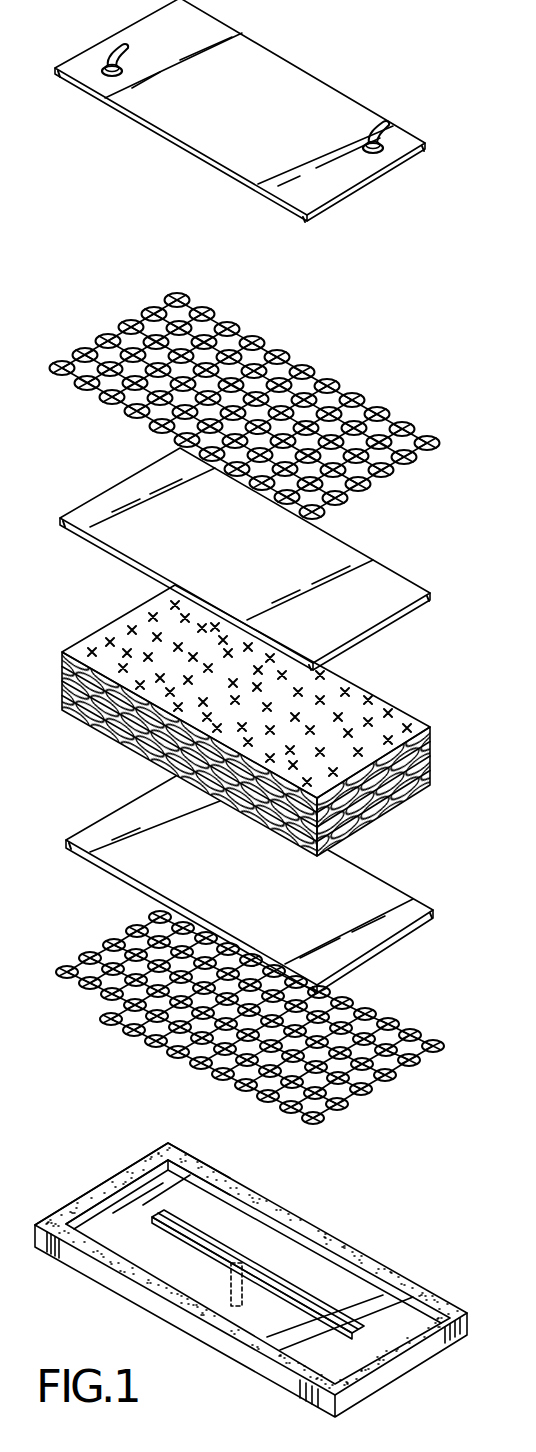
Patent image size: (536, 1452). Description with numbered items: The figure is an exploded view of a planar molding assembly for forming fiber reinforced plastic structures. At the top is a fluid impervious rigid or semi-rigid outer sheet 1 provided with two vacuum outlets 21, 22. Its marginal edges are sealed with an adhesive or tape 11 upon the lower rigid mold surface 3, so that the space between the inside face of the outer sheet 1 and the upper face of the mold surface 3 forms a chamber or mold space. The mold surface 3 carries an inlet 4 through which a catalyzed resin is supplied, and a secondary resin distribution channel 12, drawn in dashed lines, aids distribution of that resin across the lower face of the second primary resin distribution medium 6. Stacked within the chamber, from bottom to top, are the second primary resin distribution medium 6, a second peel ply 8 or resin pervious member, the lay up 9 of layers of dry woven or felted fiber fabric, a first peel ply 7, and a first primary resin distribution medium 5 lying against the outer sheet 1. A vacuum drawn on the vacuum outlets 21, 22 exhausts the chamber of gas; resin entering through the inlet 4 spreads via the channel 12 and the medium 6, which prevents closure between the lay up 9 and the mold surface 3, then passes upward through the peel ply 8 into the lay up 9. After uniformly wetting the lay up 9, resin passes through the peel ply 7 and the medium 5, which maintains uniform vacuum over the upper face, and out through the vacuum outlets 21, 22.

The fluid impervious outer sheet 1 is at (268, 54).
The vacuum outlet 21 is at (111, 56).
The vacuum outlet 22 is at (373, 118).
The first primary resin distribution medium 5 is at (366, 400).
The first peel ply 7 is at (389, 572).
The lay up 9 is at (393, 704).
The second peel ply 8 is at (396, 876).
The second primary resin distribution medium 6 is at (408, 1028).
The mold surface 3 is at (467, 1330).
The adhesive or tape 11 is at (103, 1184).
The secondary resin distribution channel 12 is at (307, 1283).
The inlet 4 is at (231, 1264).